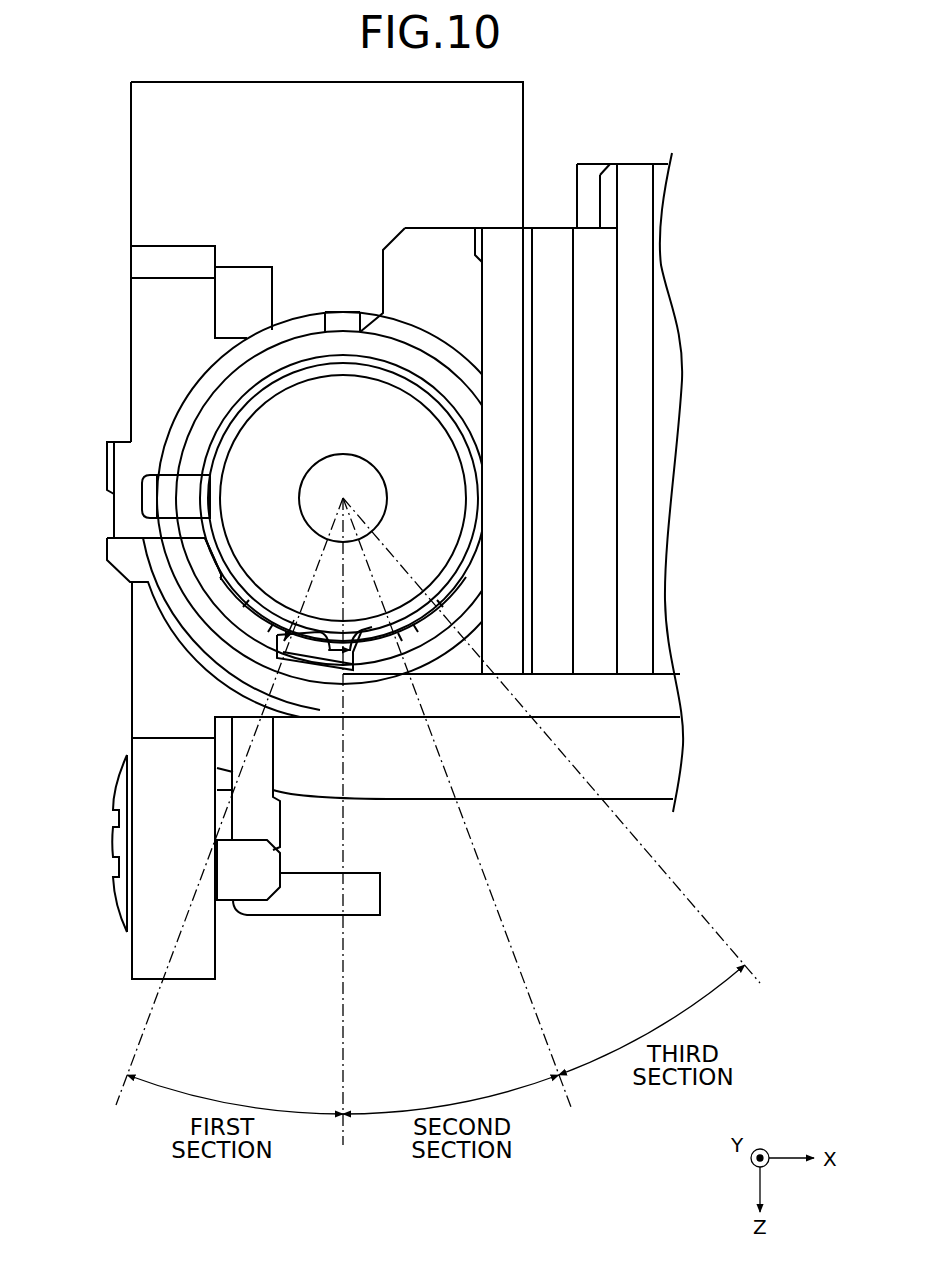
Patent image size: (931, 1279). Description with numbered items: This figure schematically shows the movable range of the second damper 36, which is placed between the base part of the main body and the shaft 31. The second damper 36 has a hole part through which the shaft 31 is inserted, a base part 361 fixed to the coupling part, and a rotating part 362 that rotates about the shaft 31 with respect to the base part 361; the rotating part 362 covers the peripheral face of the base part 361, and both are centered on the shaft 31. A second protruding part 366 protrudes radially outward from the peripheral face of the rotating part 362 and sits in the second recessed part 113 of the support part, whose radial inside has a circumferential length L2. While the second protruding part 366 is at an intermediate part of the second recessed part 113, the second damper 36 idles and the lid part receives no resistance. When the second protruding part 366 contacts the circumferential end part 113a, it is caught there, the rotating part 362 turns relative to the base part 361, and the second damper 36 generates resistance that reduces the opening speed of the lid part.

The second damper 36 is at (237, 394).
The shaft 31 is at (320, 480).
The base part 361 is at (233, 489).
The rotating part 362 is at (215, 528).
The second protruding part 366 is at (333, 643).
The circumferential length L2 is at (320, 627).
The second recessed part 113 is at (330, 668).
The circumferential end part 113a is at (334, 714).